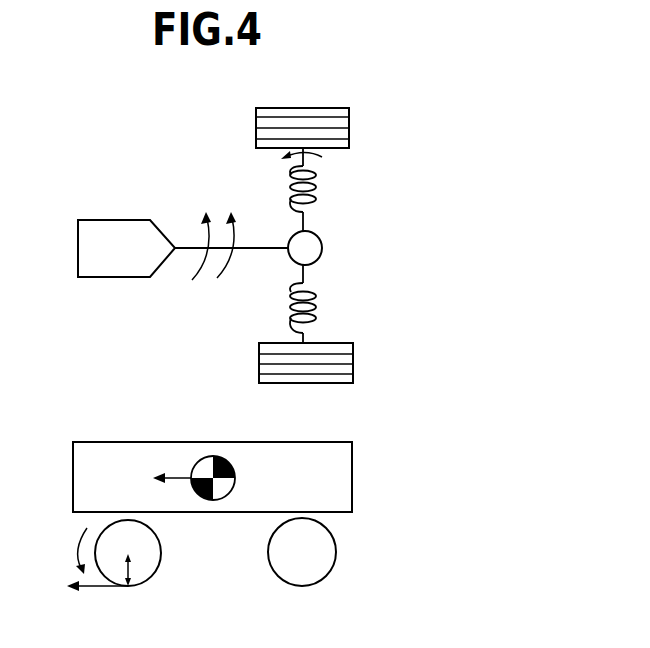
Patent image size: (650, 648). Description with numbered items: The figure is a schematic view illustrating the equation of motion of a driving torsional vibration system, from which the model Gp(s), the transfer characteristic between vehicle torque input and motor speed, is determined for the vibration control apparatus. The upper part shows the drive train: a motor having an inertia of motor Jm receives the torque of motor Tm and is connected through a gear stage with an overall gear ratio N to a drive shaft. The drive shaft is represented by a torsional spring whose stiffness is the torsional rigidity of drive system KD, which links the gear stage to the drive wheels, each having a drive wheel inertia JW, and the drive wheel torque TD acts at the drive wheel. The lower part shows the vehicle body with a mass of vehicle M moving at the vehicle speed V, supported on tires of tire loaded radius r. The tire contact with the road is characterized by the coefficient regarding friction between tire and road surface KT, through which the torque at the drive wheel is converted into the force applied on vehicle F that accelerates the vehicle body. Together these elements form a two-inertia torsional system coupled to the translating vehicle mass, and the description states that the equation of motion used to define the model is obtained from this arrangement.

The drive wheel inertia JW is at (302, 116).
The torsional rigidity of drive system KD is at (319, 189).
The drive wheel torque TD is at (290, 169).
The overall gear ratio N is at (315, 248).
The inertia of motor Jm is at (183, 248).
The torque of motor Tm is at (239, 255).
The mass of vehicle M is at (212, 477).
The vehicle speed V is at (165, 478).
The coefficient regarding friction between tire and road surface KT is at (215, 552).
The tire loaded radius r is at (122, 570).
The force applied on vehicle F is at (88, 586).